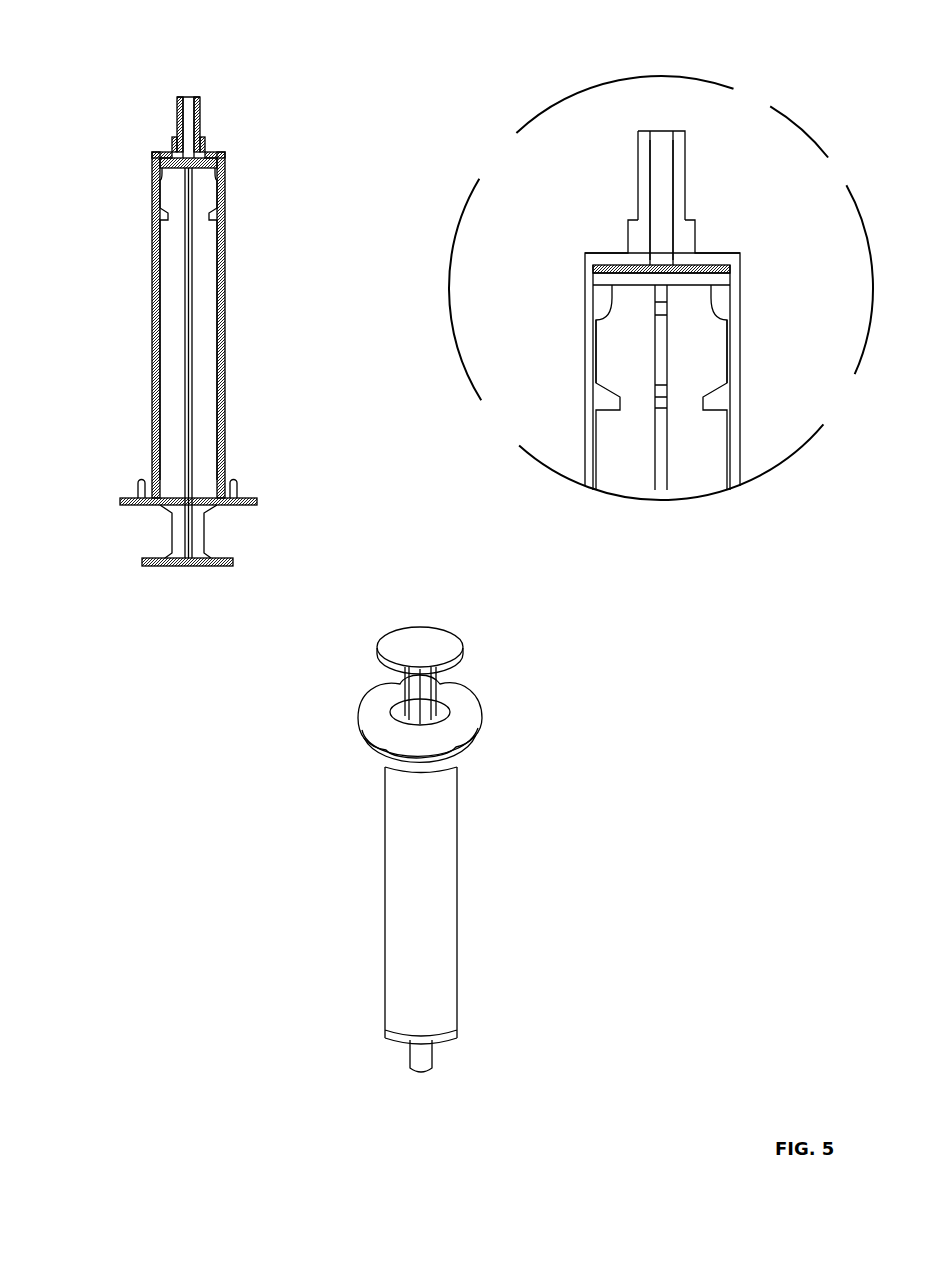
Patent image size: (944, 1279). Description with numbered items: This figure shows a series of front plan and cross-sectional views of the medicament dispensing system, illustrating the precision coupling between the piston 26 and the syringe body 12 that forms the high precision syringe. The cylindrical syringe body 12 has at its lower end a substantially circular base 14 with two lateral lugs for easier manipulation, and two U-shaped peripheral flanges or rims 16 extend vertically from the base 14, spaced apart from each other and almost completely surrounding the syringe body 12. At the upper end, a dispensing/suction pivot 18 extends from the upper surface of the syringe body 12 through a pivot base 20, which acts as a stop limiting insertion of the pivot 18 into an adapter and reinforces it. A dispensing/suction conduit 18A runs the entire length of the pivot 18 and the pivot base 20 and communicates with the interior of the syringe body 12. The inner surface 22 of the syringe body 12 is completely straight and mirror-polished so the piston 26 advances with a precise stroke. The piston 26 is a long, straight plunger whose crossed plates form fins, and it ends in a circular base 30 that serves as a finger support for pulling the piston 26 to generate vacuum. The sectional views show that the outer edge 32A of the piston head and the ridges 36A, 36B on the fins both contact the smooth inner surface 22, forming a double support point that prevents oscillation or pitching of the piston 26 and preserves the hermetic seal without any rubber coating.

The syringe body 12 is at (228, 299).
The base 14 is at (466, 719).
The peripheral flanges or rims 16 is at (127, 496).
The dispensing/suction pivot 18 is at (201, 110).
The dispensing/suction conduit 18A is at (660, 153).
The pivot base 20 is at (171, 139).
The inner surface 22 is at (219, 247).
The piston 26 is at (183, 323).
The circular base 30 is at (196, 576).
The outer edge 32A is at (586, 272).
The ridge 36A is at (587, 322).
The ridge 36B is at (735, 325).